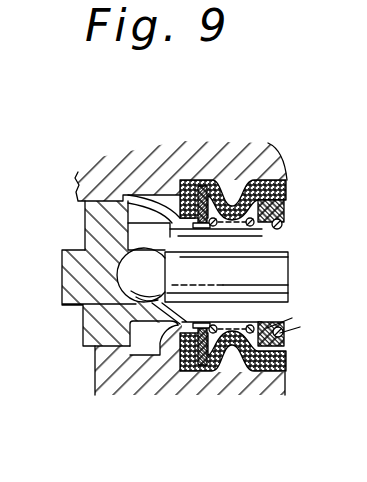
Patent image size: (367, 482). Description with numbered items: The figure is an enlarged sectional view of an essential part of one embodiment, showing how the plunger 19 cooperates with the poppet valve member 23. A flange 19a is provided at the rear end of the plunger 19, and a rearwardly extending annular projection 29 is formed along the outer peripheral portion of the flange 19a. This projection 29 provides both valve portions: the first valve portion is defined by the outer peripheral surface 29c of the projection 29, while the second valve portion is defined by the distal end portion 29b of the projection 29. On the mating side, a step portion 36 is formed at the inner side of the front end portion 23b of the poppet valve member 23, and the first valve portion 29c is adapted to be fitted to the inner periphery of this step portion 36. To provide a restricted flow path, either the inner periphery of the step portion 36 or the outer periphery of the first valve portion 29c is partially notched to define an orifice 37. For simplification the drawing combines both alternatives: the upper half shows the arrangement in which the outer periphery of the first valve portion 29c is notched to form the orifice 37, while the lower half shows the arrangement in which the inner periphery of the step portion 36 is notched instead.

The plunger 19 is at (88, 282).
The flange 19a is at (88, 224).
The poppet valve member 23 is at (233, 236).
The front end portion 23b is at (228, 188).
The annular projection 29 is at (289, 270).
The distal end portion 29b is at (278, 216).
The outer peripheral surface 29c is at (180, 193).
The step portion 36 is at (145, 190).
The orifice 37 is at (113, 170).